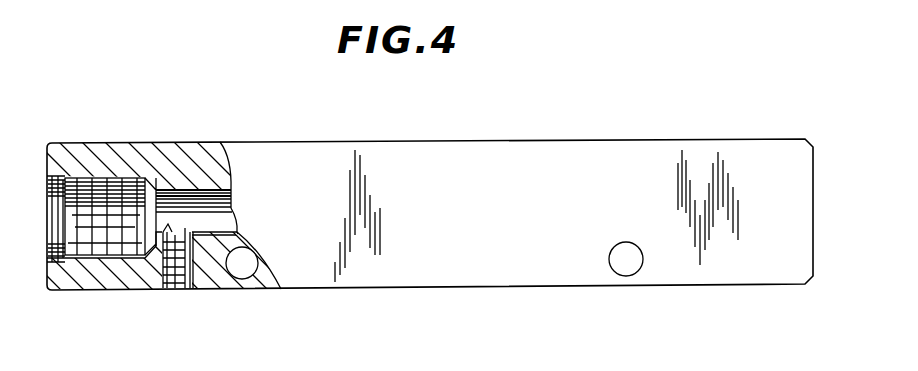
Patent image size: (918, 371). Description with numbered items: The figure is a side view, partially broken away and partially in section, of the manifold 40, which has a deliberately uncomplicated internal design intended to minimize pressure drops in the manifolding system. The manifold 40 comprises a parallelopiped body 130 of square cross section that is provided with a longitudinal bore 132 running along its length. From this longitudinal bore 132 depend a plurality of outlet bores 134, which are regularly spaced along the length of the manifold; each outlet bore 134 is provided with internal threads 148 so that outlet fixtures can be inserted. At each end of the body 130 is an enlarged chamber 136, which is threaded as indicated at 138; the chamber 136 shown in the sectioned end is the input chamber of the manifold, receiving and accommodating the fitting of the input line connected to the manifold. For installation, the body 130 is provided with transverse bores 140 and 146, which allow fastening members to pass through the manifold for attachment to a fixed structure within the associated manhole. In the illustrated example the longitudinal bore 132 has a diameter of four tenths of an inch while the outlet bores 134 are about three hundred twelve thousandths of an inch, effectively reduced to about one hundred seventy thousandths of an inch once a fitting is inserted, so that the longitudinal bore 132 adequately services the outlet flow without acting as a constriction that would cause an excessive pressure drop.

The manifold 40 is at (341, 108).
The parallelopiped body 130 is at (467, 138).
The longitudinal bore 132 is at (208, 190).
The outlet bore 134 is at (185, 275).
The enlarged chamber 136 is at (102, 190).
The threads 138 is at (130, 188).
The transverse bore 140 is at (612, 263).
The transverse bore 146 is at (252, 264).
The internal threads 148 is at (163, 268).